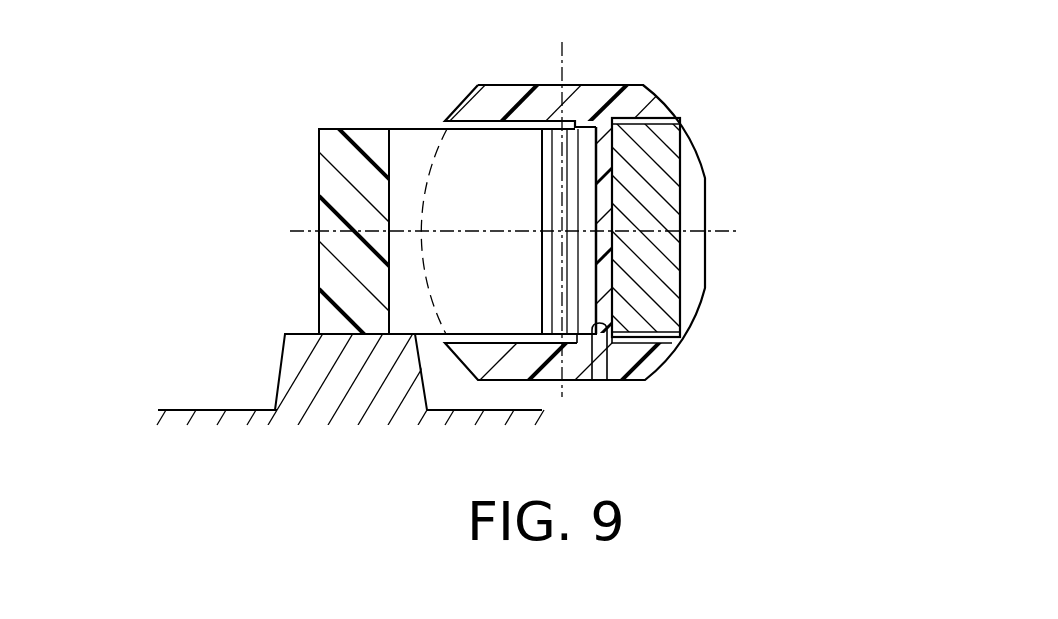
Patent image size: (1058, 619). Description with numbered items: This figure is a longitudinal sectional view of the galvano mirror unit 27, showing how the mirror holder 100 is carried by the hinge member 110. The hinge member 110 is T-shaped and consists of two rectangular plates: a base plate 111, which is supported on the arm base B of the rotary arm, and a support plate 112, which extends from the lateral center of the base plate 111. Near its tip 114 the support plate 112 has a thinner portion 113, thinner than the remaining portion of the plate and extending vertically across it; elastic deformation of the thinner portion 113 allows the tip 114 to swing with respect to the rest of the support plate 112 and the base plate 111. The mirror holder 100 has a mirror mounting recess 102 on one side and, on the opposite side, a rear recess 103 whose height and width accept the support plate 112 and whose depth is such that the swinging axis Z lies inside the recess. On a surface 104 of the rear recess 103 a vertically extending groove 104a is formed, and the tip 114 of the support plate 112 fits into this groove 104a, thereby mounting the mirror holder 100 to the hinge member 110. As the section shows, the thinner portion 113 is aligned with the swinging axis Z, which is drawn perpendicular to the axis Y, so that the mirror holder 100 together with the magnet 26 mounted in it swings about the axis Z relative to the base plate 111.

The lens holding unit assembly 27 is at (634, 227).
The mirror holder 100 is at (730, 58).
The mirror mounting recess 102 is at (685, 227).
The magnet 26 is at (665, 243).
The rear recess 103 is at (513, 124).
The surface of the rear recess 104 is at (603, 272).
The vertically extending groove 104a is at (608, 325).
The hinge member 110 is at (416, 213).
The base plate 111 is at (337, 188).
The support plate 112 is at (482, 198).
The thinner portion 113 is at (560, 258).
The tip of the support plate 114 is at (592, 122).
The arm base B is at (280, 370).
The swinging axis Z is at (560, 201).
The Y axis Y is at (528, 230).